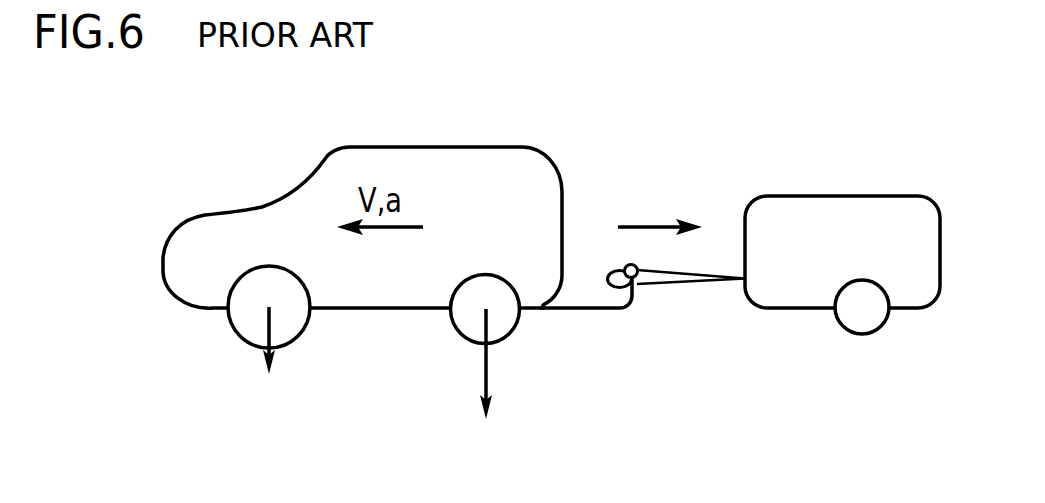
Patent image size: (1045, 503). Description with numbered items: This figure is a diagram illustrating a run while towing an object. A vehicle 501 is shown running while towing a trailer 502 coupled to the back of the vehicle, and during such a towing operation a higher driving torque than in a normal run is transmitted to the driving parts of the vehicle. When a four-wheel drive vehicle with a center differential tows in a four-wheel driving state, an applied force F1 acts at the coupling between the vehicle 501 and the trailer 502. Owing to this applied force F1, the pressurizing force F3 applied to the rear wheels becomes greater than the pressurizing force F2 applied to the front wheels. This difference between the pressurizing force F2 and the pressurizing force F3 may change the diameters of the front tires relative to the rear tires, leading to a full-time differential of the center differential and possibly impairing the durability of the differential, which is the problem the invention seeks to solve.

The vehicle 501 is at (326, 159).
The trailer 502 is at (840, 196).
The applied force F1 is at (660, 207).
The pressurizing force applied to front wheels F2 is at (269, 361).
The pressurizing force applied to rear wheels F3 is at (485, 387).